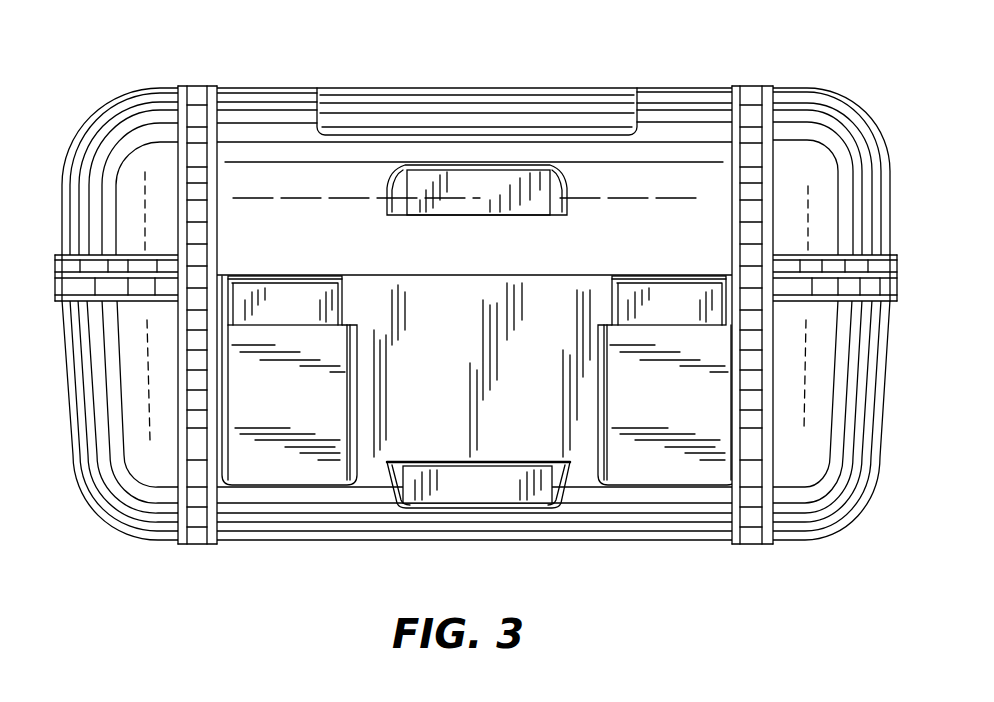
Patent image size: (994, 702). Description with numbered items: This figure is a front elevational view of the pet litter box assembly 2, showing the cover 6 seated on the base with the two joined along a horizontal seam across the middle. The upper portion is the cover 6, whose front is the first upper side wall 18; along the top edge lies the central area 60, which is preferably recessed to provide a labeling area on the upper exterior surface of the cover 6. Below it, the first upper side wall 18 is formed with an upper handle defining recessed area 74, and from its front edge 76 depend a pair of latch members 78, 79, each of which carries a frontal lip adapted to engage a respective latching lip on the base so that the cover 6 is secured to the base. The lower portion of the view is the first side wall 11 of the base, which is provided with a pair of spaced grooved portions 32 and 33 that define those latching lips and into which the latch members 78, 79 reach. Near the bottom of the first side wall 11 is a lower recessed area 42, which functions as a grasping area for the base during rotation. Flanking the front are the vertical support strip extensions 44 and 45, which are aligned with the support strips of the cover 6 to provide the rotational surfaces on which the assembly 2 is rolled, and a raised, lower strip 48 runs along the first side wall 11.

The pet litter box assembly 2 is at (662, 62).
The cover 6 is at (845, 112).
The first side wall 11 is at (535, 412).
The first upper side wall 18 is at (330, 258).
The grooved portion 32 is at (300, 412).
The grooved portion 33 is at (680, 400).
The lower recessed area 42 is at (530, 492).
The support strip extension 44 is at (202, 407).
The support strip extension 45 is at (750, 395).
The raised, lower strip 48 is at (138, 293).
The central area 60 is at (477, 89).
The upper handle defining recessed area 74 is at (457, 193).
The front edge 76 is at (563, 279).
The latch member 78 is at (307, 315).
The latch member 79 is at (677, 300).